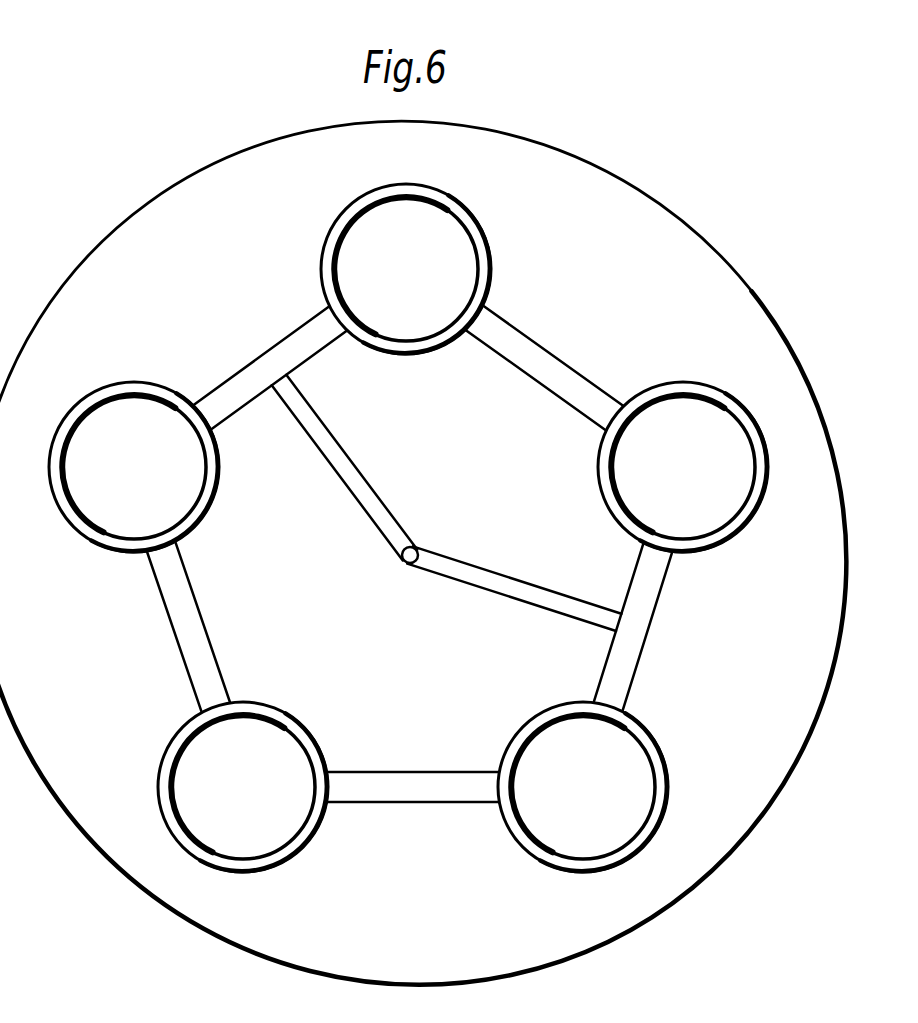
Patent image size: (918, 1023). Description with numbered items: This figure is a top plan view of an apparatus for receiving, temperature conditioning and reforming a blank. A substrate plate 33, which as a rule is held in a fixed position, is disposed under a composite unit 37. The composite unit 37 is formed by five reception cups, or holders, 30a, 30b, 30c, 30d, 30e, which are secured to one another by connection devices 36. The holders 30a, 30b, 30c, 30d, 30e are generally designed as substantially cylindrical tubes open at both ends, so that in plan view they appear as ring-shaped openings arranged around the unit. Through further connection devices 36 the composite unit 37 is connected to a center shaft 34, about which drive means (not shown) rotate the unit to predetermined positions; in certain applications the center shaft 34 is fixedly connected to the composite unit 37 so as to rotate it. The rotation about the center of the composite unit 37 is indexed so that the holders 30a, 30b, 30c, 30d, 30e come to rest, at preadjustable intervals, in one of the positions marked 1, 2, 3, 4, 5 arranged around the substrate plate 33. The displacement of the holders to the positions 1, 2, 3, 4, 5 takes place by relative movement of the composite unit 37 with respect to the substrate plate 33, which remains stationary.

The first position 1 is at (254, 787).
The second position 2 is at (141, 469).
The third position 3 is at (417, 269).
The fourth position 4 is at (707, 468).
The fifth position 5 is at (597, 787).
The reception cup 30a is at (314, 815).
The reception cup 30b is at (200, 514).
The reception cup 30c is at (478, 228).
The reception cup 30d is at (752, 514).
The reception cup 30e is at (654, 815).
The substrate plate 33 is at (790, 372).
The center shaft 34 is at (418, 547).
The connection device 36 is at (306, 348).
The composite unit 37 is at (246, 355).